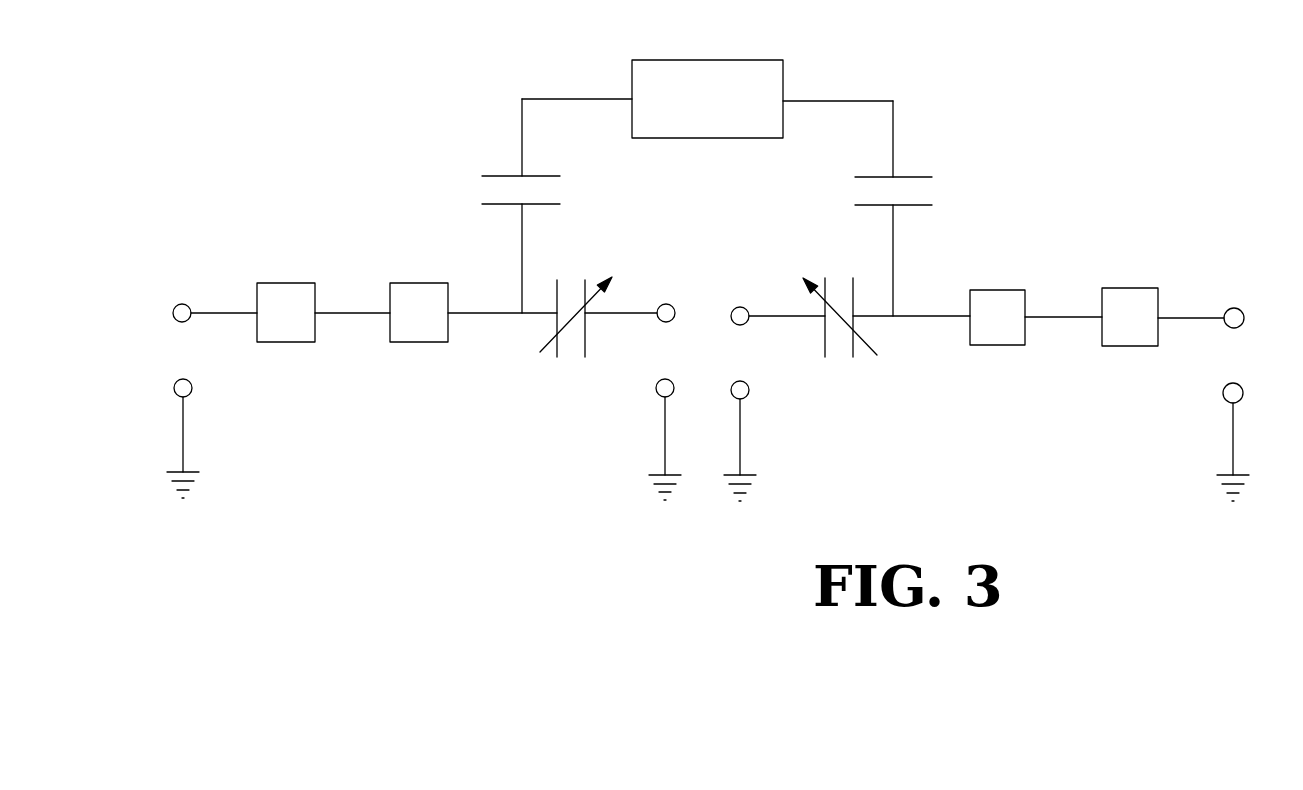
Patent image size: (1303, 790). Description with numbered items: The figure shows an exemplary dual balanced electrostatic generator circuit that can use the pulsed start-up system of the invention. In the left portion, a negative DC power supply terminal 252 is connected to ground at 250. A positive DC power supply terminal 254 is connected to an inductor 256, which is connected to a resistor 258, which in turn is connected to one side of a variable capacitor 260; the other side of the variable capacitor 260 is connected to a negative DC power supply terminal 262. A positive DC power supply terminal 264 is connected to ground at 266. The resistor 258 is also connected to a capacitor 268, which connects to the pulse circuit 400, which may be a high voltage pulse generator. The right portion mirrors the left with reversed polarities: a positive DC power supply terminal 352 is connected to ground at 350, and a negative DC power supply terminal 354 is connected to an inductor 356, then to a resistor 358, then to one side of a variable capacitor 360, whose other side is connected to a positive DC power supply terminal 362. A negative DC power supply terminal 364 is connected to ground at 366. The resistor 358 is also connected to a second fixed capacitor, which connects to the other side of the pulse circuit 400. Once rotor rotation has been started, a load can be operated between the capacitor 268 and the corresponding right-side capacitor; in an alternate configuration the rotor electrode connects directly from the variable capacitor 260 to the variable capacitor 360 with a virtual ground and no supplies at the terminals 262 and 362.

The ground 250 is at (190, 470).
The negative DC power supply terminal 252 is at (192, 388).
The positive DC power supply terminal 254 is at (175, 305).
The inductor 256 is at (295, 283).
The resistor 258 is at (427, 343).
The variable capacitor 260 is at (552, 352).
The negative DC power supply terminal 262 is at (673, 305).
The positive DC power supply terminal 264 is at (657, 392).
The ground 266 is at (658, 474).
The capacitor 268 is at (492, 176).
The ground 350 is at (1222, 473).
The positive DC power supply terminal 352 is at (1225, 400).
The negative DC power supply terminal 354 is at (1242, 309).
The inductor 356 is at (1125, 288).
The resistor 358 is at (1005, 347).
The variable capacitor 360 is at (868, 336).
The positive DC power supply terminal 362 is at (727, 305).
The negative DC power supply terminal 364 is at (750, 390).
The ground 366 is at (750, 470).
The pulse circuit 400 is at (742, 118).